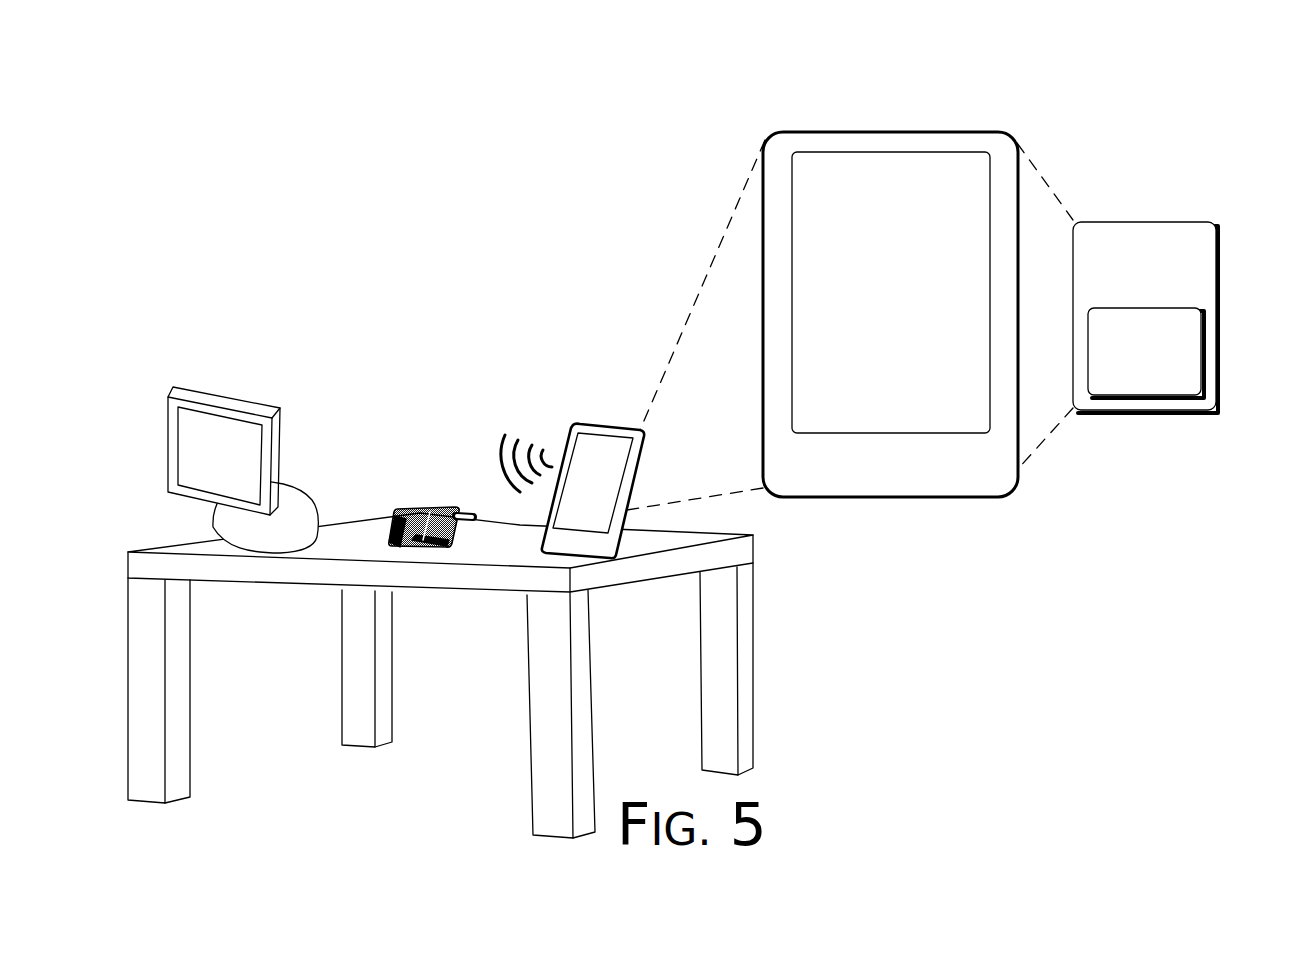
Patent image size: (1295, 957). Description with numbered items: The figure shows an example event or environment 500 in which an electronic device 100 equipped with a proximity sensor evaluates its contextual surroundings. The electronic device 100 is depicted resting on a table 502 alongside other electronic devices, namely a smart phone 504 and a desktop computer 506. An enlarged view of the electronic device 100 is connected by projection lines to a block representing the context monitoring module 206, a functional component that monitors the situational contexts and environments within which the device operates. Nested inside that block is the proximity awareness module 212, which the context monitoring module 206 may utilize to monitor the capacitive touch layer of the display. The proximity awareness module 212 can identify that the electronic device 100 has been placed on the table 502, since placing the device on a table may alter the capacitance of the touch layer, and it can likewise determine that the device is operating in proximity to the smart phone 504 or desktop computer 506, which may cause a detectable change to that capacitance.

The environment 500 is at (1210, 110).
The table 502 is at (512, 551).
The smart phone 504 is at (457, 509).
The desktop computer 506 is at (257, 408).
The electronic device 100 is at (975, 123).
The context monitoring module 206 is at (1190, 285).
The proximity awareness module 212 is at (1160, 388).